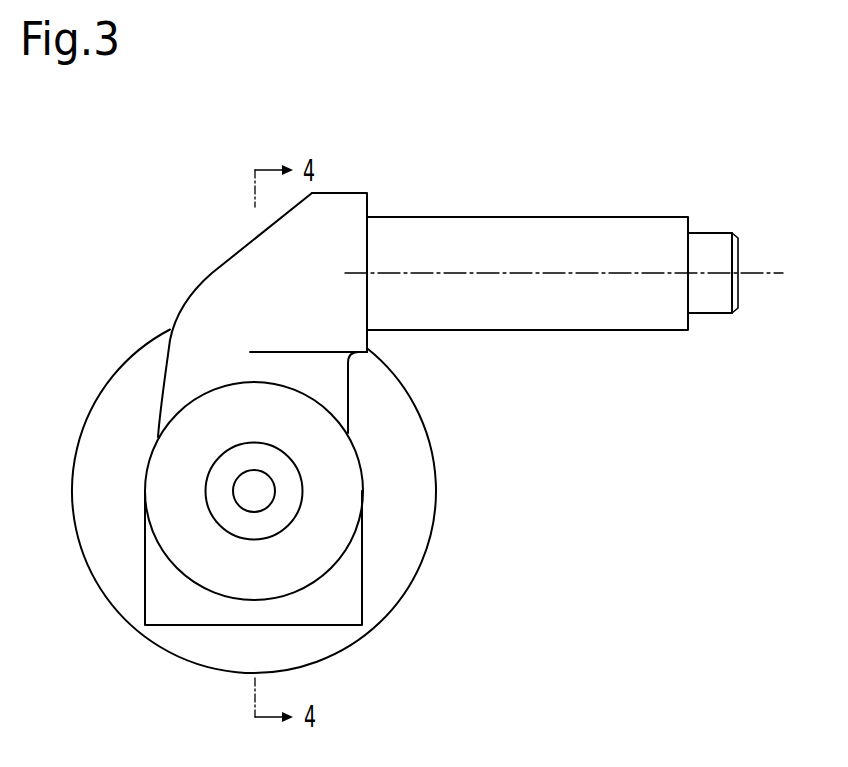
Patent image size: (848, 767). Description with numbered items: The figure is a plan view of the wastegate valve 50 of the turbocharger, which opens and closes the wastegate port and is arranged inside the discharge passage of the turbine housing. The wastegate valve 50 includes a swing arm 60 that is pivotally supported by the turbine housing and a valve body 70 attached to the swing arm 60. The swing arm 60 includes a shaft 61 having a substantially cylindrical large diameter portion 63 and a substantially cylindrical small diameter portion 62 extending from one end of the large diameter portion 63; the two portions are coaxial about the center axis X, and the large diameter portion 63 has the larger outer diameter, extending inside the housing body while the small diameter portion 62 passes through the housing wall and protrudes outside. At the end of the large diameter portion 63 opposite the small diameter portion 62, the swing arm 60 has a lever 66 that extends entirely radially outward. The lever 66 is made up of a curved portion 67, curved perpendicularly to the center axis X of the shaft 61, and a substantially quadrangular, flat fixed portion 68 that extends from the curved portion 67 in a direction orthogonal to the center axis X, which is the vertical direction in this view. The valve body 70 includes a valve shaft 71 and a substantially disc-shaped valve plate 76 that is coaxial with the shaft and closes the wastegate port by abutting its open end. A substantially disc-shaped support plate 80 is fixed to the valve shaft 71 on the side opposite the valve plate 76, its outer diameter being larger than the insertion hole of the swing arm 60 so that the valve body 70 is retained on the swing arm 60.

The wastegate valve 50 is at (229, 286).
The swing arm 60 is at (352, 193).
The shaft 61 is at (552, 224).
The small diameter portion 62 is at (716, 232).
The large diameter portion 63 is at (637, 217).
The lever 66 is at (373, 382).
The curved portion 67 is at (367, 340).
The fixed portion 68 is at (350, 377).
The valve body 70 is at (229, 512).
The valve shaft 71 is at (217, 525).
The valve plate 76 is at (79, 540).
The support plate 80 is at (328, 570).
The center axis X is at (762, 272).